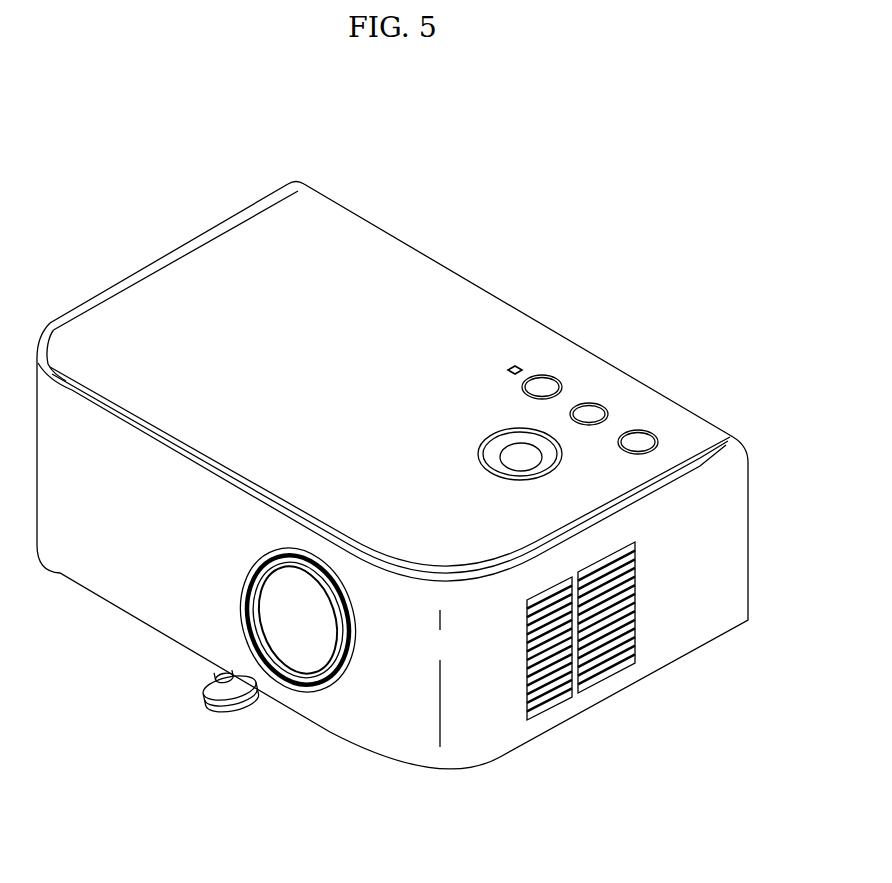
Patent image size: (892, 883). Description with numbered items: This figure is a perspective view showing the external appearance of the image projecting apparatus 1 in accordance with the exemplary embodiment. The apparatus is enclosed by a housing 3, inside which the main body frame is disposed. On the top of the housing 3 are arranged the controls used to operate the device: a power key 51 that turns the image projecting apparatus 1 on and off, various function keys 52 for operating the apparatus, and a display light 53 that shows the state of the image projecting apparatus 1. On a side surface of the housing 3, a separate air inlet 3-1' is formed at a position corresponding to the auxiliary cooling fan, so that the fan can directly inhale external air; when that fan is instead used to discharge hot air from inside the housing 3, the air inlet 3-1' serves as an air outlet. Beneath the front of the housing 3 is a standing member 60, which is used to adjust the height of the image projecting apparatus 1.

The image projecting apparatus 1 is at (666, 165).
The housing 3 is at (672, 415).
The separate air inlet 3-1' is at (613, 635).
The power key 51 is at (500, 440).
The function keys 52 is at (640, 438).
The display light 53 is at (516, 365).
The standing member 60 is at (215, 705).